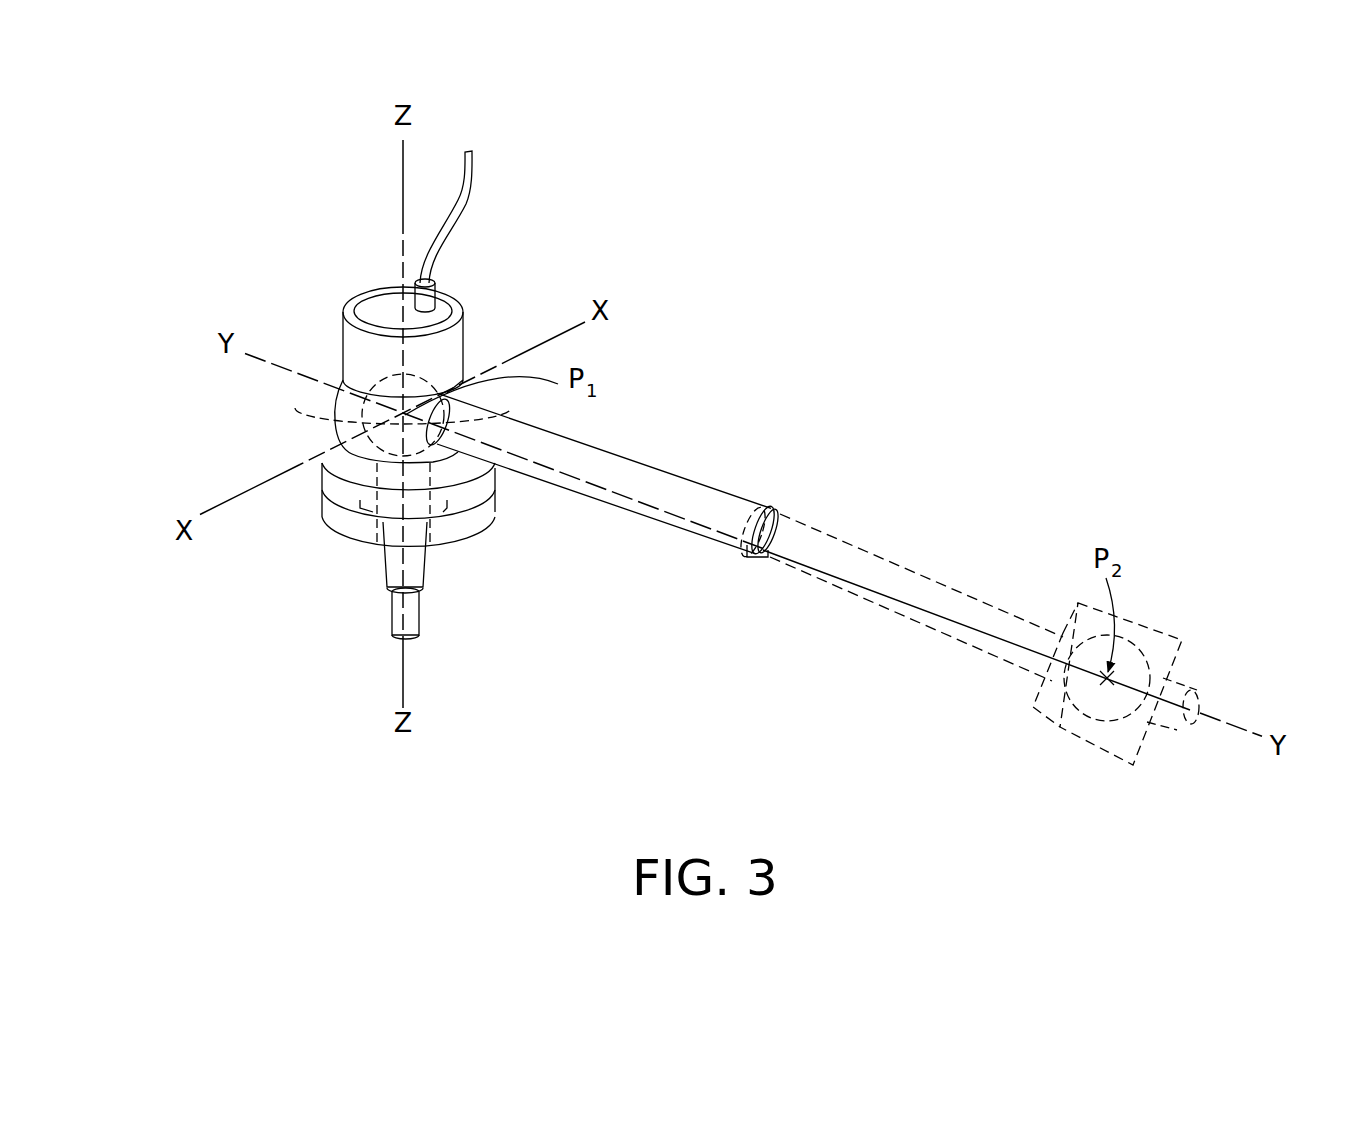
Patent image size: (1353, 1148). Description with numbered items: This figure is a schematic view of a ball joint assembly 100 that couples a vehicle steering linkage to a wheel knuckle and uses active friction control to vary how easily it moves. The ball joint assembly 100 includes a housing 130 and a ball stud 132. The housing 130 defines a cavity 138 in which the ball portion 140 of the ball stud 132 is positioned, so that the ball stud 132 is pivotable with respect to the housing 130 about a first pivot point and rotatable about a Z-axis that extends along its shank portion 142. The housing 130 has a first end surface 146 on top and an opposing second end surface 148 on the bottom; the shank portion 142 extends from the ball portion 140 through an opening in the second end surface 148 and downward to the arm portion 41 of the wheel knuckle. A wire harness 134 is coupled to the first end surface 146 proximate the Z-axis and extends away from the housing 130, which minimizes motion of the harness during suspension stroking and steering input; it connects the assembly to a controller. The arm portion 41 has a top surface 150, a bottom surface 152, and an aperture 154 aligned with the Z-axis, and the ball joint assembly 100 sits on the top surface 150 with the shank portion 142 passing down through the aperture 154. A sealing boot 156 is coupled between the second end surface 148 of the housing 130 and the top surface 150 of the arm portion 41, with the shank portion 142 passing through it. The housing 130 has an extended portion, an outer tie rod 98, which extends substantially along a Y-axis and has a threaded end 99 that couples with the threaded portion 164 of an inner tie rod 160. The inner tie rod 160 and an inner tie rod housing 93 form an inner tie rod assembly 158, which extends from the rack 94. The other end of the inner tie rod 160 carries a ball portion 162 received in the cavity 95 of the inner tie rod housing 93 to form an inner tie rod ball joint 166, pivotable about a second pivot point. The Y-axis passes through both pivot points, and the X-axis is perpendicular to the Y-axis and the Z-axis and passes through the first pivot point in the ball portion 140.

The ball joint assembly 100 is at (214, 218).
The wire harness 134 is at (486, 186).
The first end surface 146 is at (378, 300).
The housing 130 is at (336, 356).
The cavity 138 is at (438, 372).
The ball portion 140 is at (332, 414).
The second end surface 148 is at (322, 456).
The sealing boot 156 is at (353, 473).
The top surface 150 is at (493, 470).
The bottom surface 152 is at (480, 529).
The aperture 154 is at (382, 527).
The shank portion 142 is at (369, 533).
The arm portion 41 is at (437, 538).
The ball stud 132 is at (432, 598).
The outer tie rod 98 is at (642, 446).
The threaded end 99 is at (776, 497).
The threaded portion 164 is at (749, 559).
The inner tie rod 160 is at (903, 552).
The inner tie rod assembly 158 is at (998, 528).
The ball portion 162 is at (1138, 642).
The inner tie rod ball joint 166 is at (1000, 713).
The inner tie rod housing 93 is at (1087, 745).
The cavity 95 is at (1118, 722).
The rack 94 is at (1183, 686).